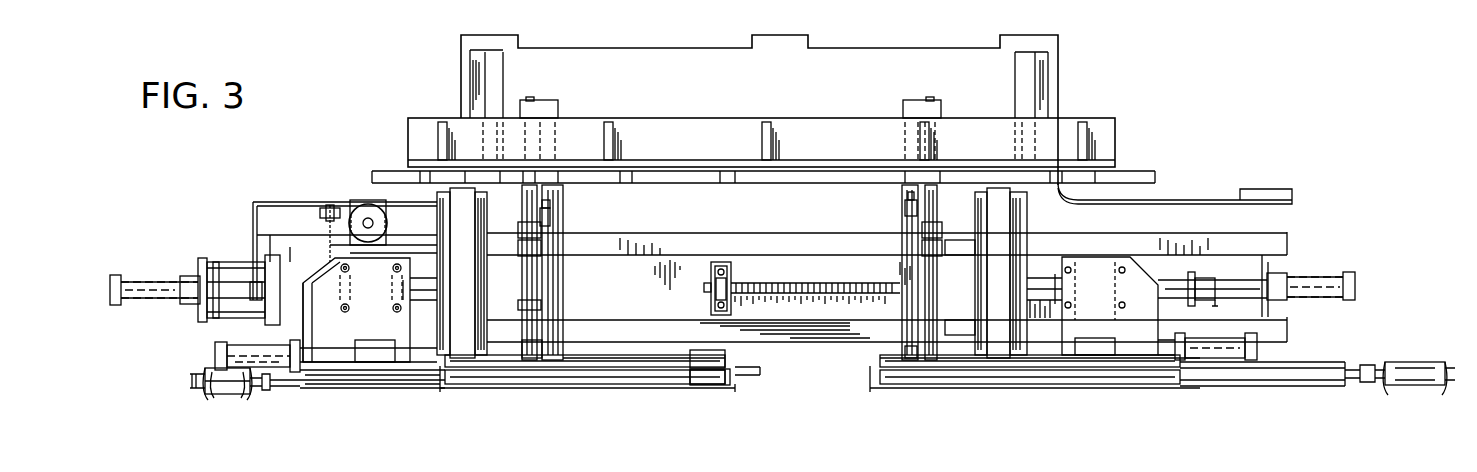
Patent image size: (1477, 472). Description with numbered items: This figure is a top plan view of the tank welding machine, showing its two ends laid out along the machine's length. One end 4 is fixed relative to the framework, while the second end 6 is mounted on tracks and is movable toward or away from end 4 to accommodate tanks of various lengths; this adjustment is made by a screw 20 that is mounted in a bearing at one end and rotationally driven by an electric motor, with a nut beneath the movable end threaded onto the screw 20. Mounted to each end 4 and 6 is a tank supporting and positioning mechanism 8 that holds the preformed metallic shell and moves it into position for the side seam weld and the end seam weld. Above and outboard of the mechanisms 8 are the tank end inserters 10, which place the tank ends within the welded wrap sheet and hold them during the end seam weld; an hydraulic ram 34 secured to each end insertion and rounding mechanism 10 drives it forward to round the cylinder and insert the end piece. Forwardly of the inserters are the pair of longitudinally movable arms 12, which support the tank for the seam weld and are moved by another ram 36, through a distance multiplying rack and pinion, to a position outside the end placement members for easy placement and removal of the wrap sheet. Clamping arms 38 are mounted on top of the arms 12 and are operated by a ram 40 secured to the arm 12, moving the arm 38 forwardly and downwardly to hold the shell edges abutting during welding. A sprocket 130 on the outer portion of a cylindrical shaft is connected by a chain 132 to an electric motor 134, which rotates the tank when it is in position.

The end 4 is at (386, 162).
The second end 6 is at (1206, 178).
The tank supporting and positioning mechanism 8 is at (160, 325).
The tank end inserter 10 is at (475, 244).
The longitudinally movable arm 12 is at (641, 404).
The screw 20 is at (868, 290).
The hydraulic ram 34 is at (172, 283).
The ram 36 is at (215, 352).
The clamping arm 38 is at (716, 384).
The ram 40 is at (228, 378).
The sprocket 130 is at (316, 318).
The chain 132 is at (330, 228).
The electric motor 134 is at (366, 204).